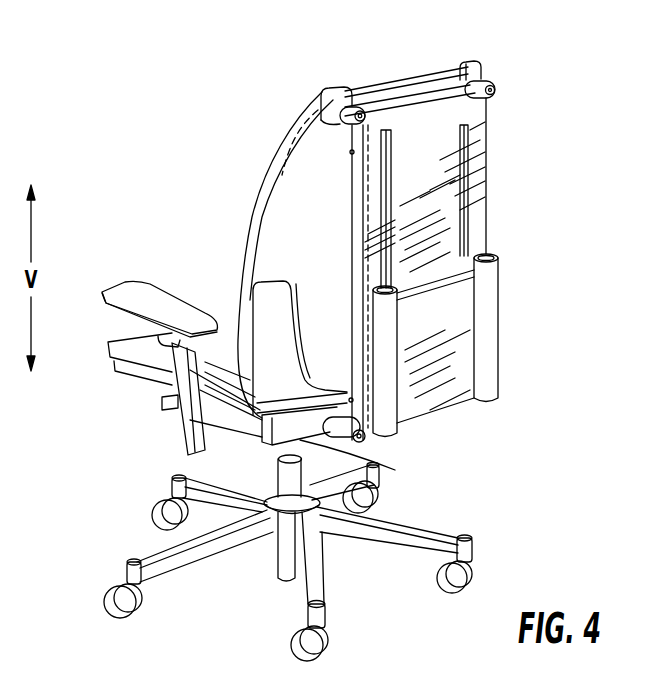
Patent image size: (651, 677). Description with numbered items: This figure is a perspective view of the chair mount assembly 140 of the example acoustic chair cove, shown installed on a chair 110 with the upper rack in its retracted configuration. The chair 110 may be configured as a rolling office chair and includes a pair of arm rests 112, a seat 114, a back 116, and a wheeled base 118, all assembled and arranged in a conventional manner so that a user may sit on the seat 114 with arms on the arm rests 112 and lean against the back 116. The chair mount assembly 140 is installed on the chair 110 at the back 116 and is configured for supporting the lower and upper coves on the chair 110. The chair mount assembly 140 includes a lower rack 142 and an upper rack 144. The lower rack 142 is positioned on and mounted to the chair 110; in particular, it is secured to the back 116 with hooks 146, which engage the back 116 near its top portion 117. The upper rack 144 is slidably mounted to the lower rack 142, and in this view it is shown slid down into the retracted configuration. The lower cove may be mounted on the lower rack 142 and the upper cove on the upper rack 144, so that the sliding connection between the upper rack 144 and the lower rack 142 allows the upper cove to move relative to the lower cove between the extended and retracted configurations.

The chair 110 is at (252, 438).
The arm rests 112 is at (155, 297).
The seat 114 is at (145, 363).
The back 116 is at (287, 223).
The top portion 117 is at (410, 73).
The wheeled base 118 is at (470, 540).
The chair mount assembly 140 is at (500, 78).
The lower rack 142 is at (478, 208).
The upper rack 144 is at (467, 298).
The hooks 146 is at (340, 92).